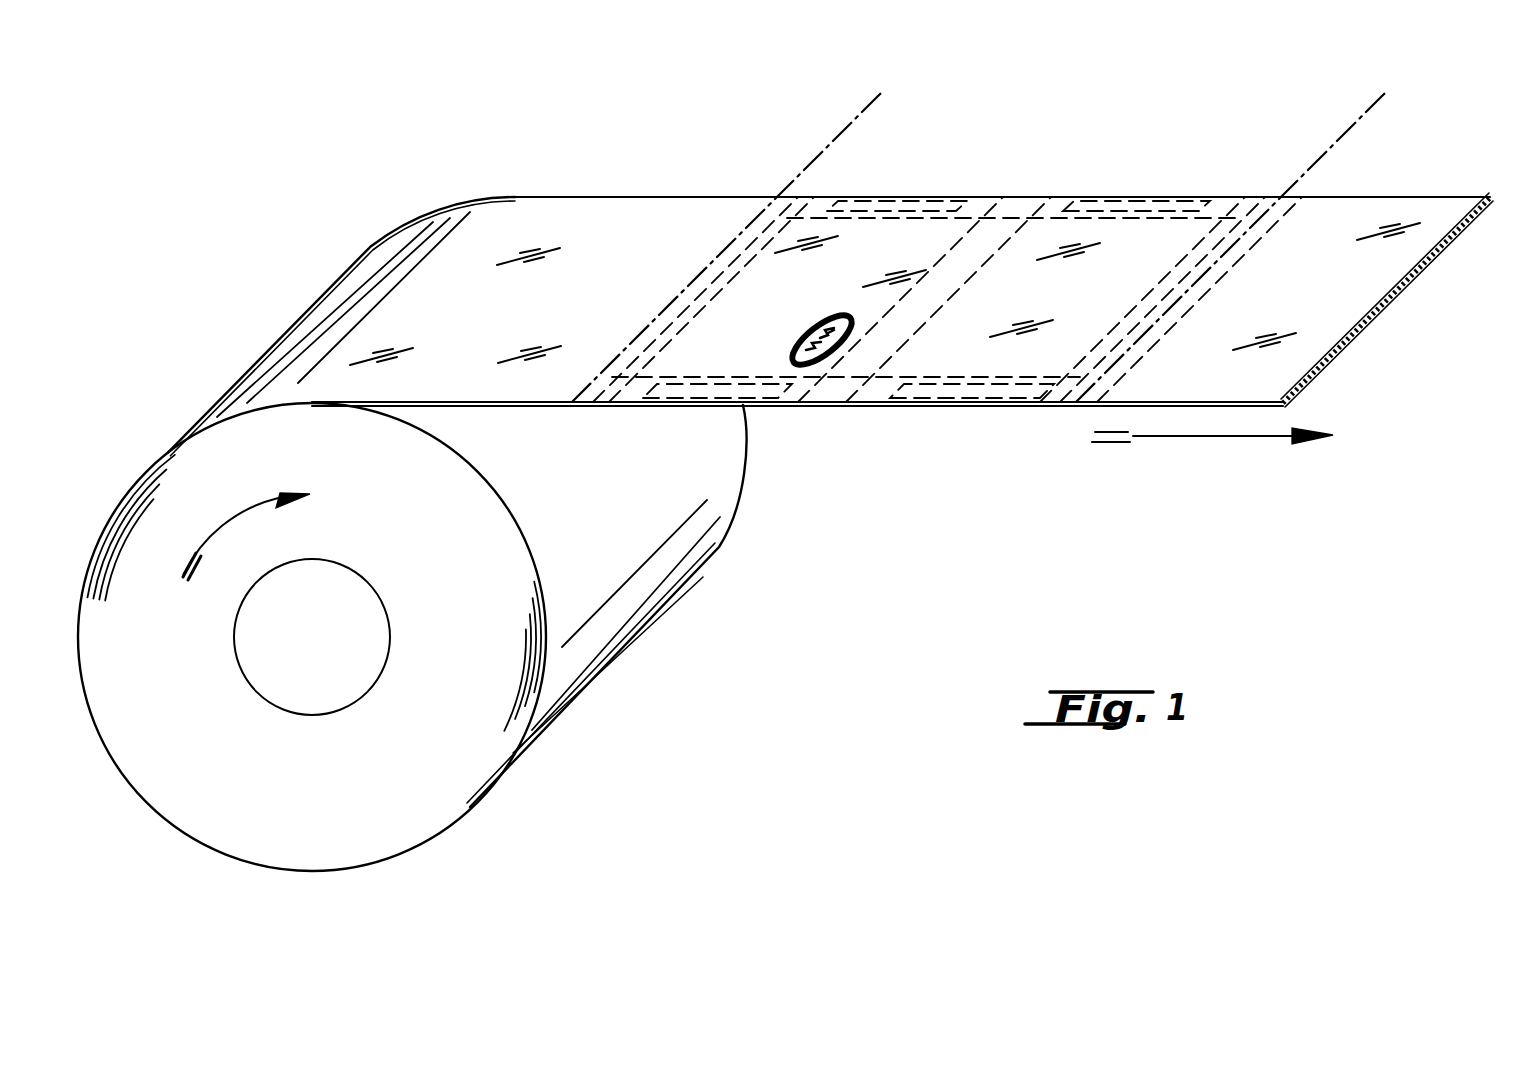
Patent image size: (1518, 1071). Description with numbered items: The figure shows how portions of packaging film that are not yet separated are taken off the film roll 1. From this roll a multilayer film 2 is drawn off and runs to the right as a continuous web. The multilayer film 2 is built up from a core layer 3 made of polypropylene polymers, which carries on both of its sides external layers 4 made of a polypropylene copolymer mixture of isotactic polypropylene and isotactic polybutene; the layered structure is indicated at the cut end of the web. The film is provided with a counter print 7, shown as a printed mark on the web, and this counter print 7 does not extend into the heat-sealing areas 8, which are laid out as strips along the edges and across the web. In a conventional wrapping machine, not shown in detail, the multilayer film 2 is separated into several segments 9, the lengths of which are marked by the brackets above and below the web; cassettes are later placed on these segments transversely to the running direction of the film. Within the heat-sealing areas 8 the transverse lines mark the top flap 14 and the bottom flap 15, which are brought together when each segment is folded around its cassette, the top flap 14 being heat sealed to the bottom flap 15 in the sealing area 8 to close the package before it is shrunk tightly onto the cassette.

The film roll 1 is at (612, 645).
The multilayer film 2 is at (902, 284).
The core layer 3 is at (1347, 342).
The external layers 4 is at (1313, 338).
The counter print 7 is at (813, 323).
The heat-sealing areas 8 is at (678, 302).
The segments 9 is at (1386, 86).
The top flap 14 is at (637, 406).
The bottom flap 15 is at (873, 406).